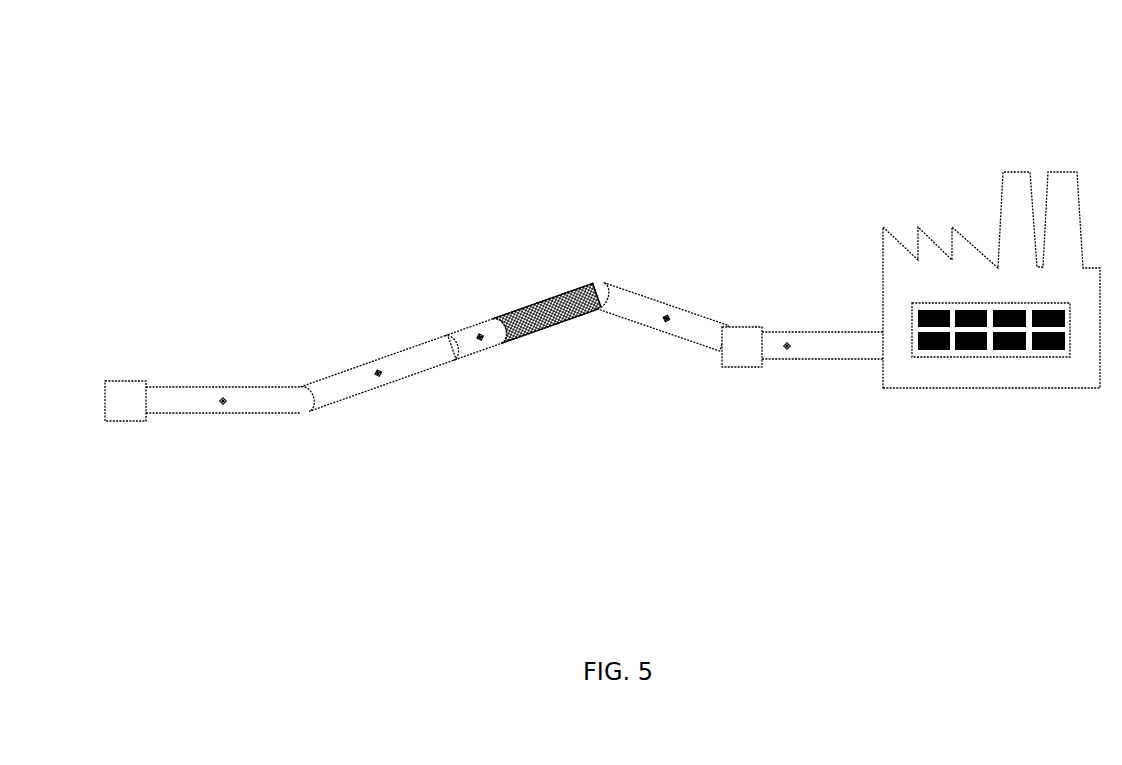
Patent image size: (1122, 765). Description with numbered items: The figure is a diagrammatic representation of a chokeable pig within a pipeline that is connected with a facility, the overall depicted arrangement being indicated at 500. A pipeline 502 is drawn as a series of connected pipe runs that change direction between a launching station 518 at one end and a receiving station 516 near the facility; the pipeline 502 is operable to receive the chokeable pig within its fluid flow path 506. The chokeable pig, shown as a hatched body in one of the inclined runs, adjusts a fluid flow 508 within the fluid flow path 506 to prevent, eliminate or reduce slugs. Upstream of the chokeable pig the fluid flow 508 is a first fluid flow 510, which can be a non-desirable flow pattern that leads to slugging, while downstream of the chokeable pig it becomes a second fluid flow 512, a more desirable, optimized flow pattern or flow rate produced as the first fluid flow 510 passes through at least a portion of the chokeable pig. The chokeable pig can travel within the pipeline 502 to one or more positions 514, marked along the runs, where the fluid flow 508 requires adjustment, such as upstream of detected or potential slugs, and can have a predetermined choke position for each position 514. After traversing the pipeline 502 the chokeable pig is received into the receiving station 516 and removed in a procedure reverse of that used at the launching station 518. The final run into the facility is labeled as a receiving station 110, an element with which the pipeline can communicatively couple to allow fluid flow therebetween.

The fluid transport system 500 is at (752, 103).
The pipeline 502 is at (505, 432).
The fluid flow path 506 is at (185, 400).
The fluid flow 508 is at (223, 418).
The first fluid flow 510 is at (486, 332).
The second fluid flow 512 is at (664, 313).
The positions 514 is at (283, 388).
The receiving station 516 is at (735, 370).
The launching station 518 is at (118, 422).
The receiving station 110 is at (858, 347).